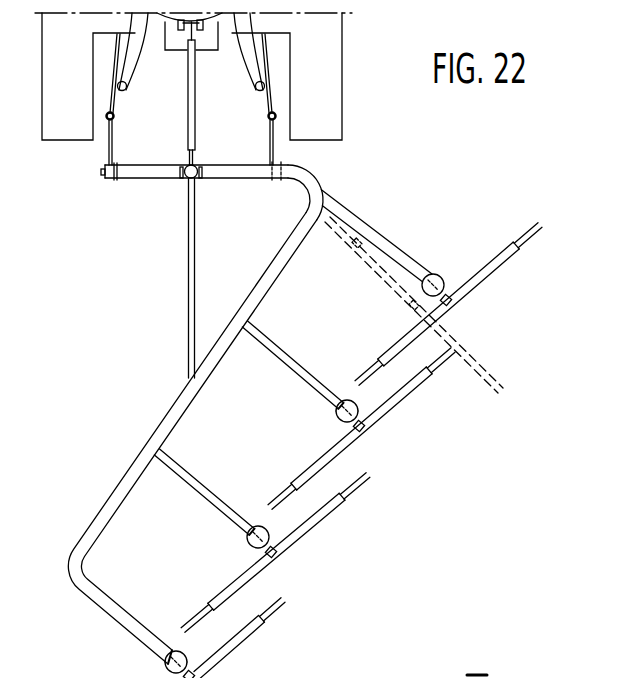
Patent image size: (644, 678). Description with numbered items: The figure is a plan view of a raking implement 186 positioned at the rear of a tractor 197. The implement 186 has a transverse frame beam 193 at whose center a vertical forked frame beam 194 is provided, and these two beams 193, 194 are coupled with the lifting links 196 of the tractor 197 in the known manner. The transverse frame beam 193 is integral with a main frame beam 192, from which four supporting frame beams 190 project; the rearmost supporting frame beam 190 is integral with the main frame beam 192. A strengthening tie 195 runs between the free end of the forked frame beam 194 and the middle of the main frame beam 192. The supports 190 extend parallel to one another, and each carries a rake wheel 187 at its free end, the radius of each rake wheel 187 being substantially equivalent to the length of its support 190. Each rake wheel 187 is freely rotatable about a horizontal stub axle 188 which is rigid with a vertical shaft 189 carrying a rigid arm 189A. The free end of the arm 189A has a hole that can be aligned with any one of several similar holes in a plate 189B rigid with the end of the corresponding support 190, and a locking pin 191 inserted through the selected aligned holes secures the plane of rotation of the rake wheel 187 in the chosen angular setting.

The raking implement 186 is at (160, 414).
The rake wheel 187 is at (400, 397).
The horizontal stub axle 188 is at (445, 282).
The vertical shaft 189 is at (344, 421).
The arm 189A is at (351, 404).
The plate 189B is at (336, 412).
The supporting frame beam 190 is at (290, 368).
The locking pin 191 is at (343, 401).
The main frame beam 192 is at (250, 414).
The transverse frame beam 193 is at (163, 178).
The vertical forked frame beam 194 is at (197, 166).
The strengthening tie 195 is at (190, 251).
The lifting links 196 is at (188, 71).
The tractor 197 is at (343, 98).